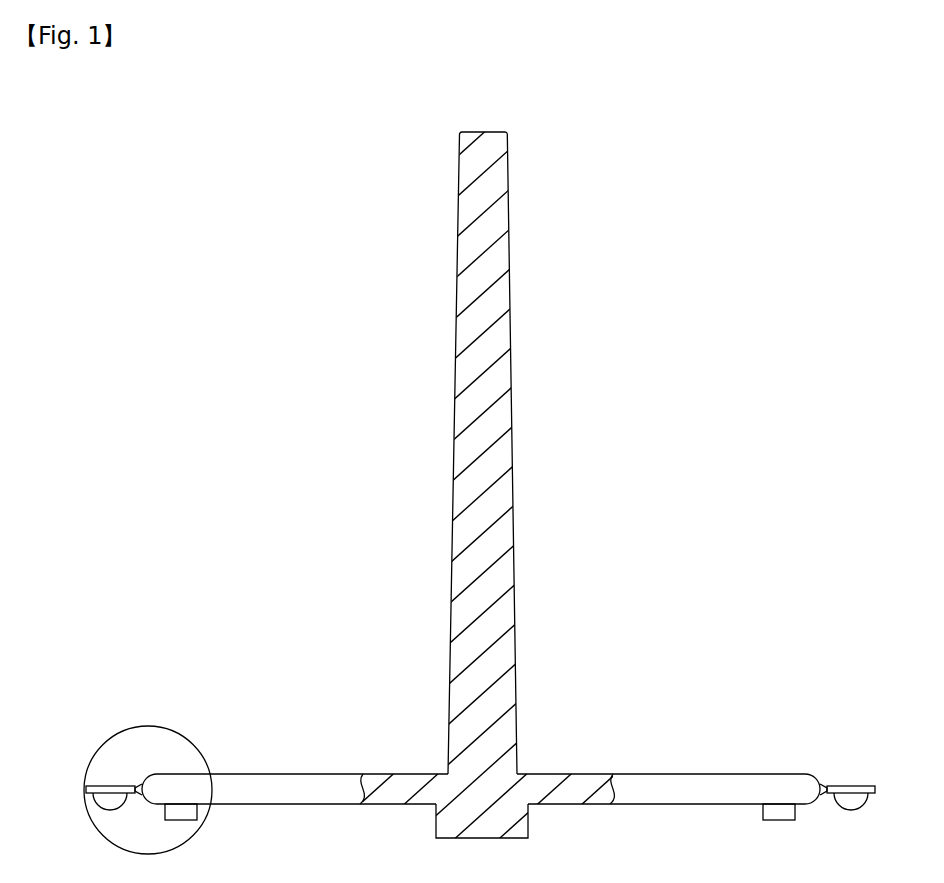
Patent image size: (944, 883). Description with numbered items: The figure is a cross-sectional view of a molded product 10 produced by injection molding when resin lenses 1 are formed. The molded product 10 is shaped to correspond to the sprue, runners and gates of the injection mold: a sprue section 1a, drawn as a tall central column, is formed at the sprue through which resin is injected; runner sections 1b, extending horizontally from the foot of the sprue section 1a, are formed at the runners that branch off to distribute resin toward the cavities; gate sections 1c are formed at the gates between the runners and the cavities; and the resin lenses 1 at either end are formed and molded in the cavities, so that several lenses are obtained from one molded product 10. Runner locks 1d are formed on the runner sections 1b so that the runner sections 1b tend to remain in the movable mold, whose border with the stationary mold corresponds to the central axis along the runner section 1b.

The molded product 10 is at (512, 208).
The sprue section 1a is at (503, 427).
The runner section 1b is at (332, 782).
The gate section 1c is at (140, 790).
The resin lens 1 is at (107, 797).
The runner lock 1d is at (185, 821).